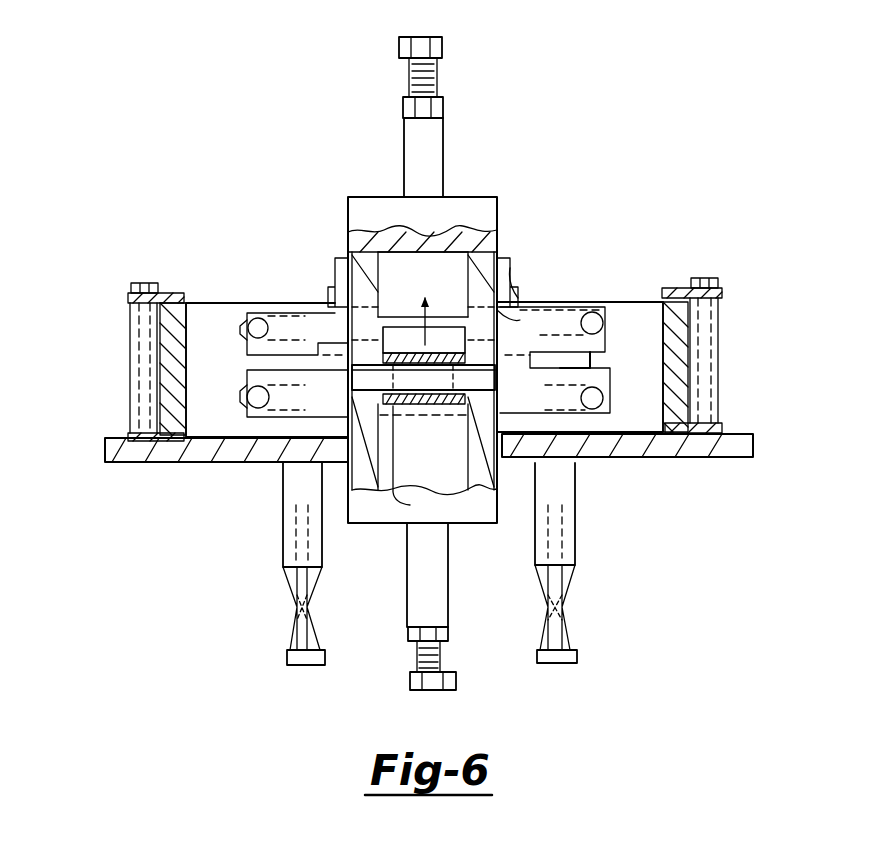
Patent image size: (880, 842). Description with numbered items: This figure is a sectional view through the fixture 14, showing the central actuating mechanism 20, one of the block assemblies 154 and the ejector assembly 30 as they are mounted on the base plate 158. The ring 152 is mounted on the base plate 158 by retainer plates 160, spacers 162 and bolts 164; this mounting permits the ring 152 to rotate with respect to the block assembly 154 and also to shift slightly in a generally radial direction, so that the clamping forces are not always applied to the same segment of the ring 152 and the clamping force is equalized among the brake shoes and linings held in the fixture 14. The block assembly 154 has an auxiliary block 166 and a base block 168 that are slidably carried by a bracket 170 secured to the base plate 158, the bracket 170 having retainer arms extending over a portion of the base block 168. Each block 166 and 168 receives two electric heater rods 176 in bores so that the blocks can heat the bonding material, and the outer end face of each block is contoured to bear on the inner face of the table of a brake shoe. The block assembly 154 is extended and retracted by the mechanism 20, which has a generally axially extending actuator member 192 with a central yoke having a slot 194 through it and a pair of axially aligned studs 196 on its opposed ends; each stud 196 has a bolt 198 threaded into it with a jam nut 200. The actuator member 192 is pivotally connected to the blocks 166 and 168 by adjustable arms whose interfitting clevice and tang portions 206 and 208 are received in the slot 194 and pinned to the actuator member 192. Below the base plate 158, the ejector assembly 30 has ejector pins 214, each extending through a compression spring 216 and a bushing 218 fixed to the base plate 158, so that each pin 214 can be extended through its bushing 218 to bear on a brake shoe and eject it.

The fixture 14 is at (122, 232).
The mechanism 20 is at (389, 331).
The ejector assembly 30 is at (423, 564).
The ring 152 is at (597, 300).
The block assembly 154 is at (592, 370).
The base plate 158 is at (730, 437).
The retainer plates 160 is at (128, 300).
The spacers 162 is at (128, 352).
The bolts 164 is at (130, 290).
The auxiliary block 166 is at (275, 271).
The base block 168 is at (247, 413).
The bracket 170 is at (523, 308).
The electric heater rods 176 is at (243, 337).
The actuator member 192 is at (345, 233).
The slot 194 is at (510, 262).
The studs 196 is at (445, 166).
The bolt 198 is at (440, 74).
The jam nut 200 is at (445, 109).
The clevice portion 206 is at (429, 463).
The tang portion 208 is at (437, 406).
The ejector pins 214 is at (298, 608).
The compression spring 216 is at (290, 648).
The bushing 218 is at (283, 502).